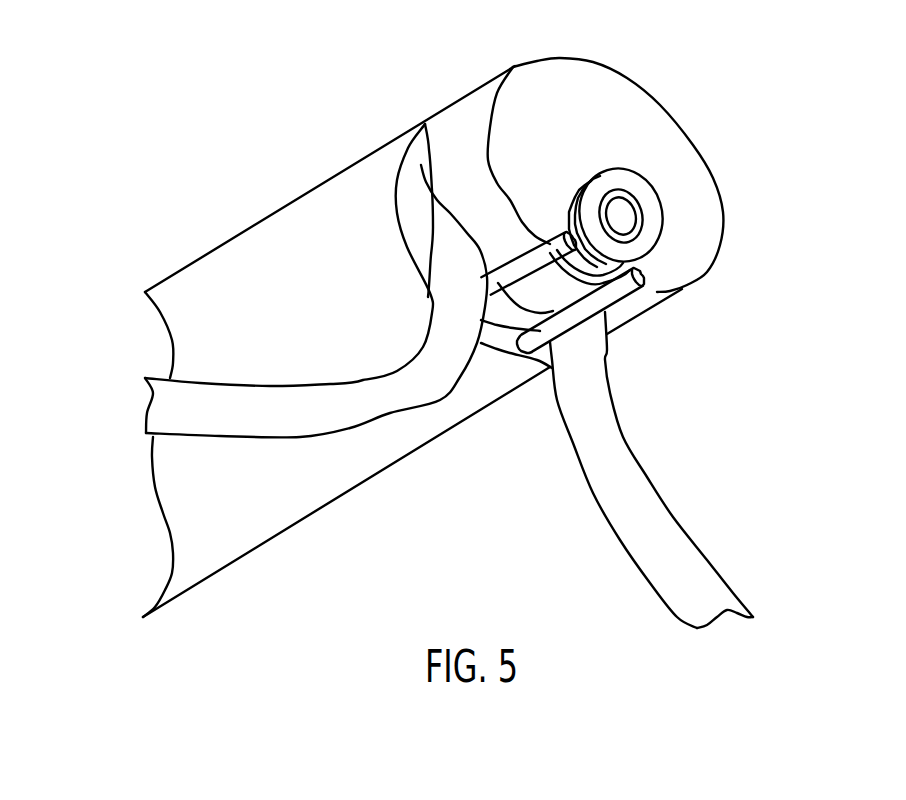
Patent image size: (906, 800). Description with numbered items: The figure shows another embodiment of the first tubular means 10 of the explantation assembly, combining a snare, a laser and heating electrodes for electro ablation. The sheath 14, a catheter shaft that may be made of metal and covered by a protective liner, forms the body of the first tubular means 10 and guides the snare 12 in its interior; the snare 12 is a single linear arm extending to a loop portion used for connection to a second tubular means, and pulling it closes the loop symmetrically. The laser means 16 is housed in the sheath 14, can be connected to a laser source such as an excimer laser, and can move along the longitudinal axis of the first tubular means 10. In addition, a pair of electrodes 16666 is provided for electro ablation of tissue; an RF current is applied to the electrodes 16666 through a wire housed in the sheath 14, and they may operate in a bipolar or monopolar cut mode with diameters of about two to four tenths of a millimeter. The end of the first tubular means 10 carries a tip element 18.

The first tubular means 10 is at (128, 561).
The snare 12 is at (620, 468).
The sheath 14 is at (243, 262).
The laser means 16 is at (650, 223).
The tip element 18 is at (670, 133).
The pair of electrodes 16666 is at (620, 293).